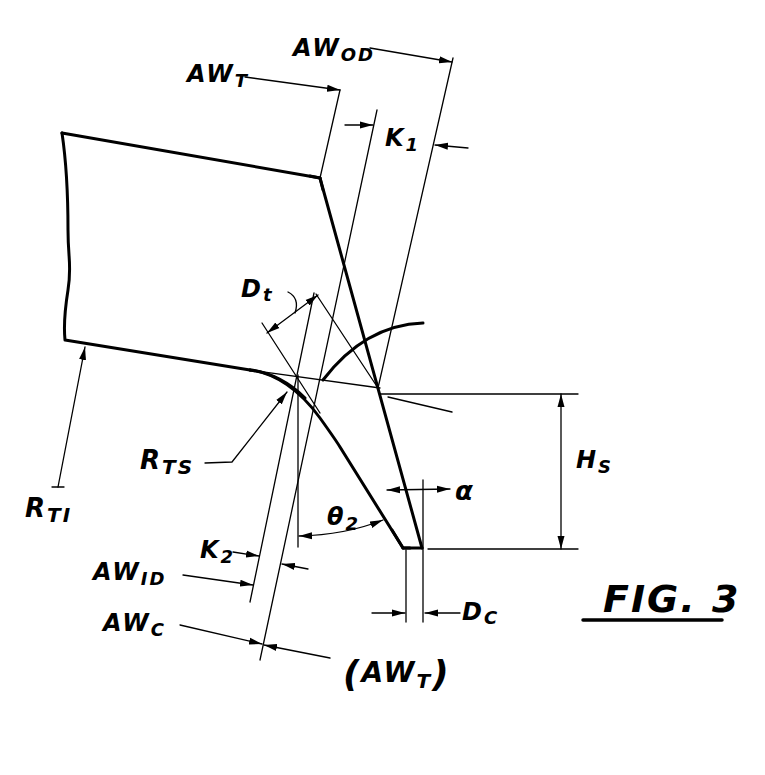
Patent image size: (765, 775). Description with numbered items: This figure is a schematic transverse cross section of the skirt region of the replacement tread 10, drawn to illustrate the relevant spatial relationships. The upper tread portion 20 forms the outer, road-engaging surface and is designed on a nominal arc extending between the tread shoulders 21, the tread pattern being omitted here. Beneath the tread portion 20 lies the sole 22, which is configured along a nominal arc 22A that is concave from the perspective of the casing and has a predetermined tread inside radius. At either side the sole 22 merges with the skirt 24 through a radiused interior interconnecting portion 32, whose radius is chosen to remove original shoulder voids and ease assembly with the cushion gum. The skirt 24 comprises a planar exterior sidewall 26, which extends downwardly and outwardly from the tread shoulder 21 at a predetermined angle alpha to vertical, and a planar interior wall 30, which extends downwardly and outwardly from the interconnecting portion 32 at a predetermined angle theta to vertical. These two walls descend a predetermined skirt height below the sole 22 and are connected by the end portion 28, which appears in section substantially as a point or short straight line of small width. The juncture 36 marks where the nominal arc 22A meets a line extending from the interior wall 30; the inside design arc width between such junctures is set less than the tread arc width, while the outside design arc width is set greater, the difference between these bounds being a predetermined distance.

The replacement tread 10 is at (310, 342).
The upper tread portion 20 is at (232, 119).
The tread shoulder 21 is at (322, 178).
The sole 22 is at (124, 351).
The nominal arc 22A is at (423, 323).
The skirt 24 is at (360, 468).
The exterior sidewall 26 is at (400, 465).
The end portion 28 is at (422, 550).
The interior wall 30 is at (397, 540).
The radiused interior interconnecting portion 32 is at (268, 381).
The juncture 36 is at (295, 372).